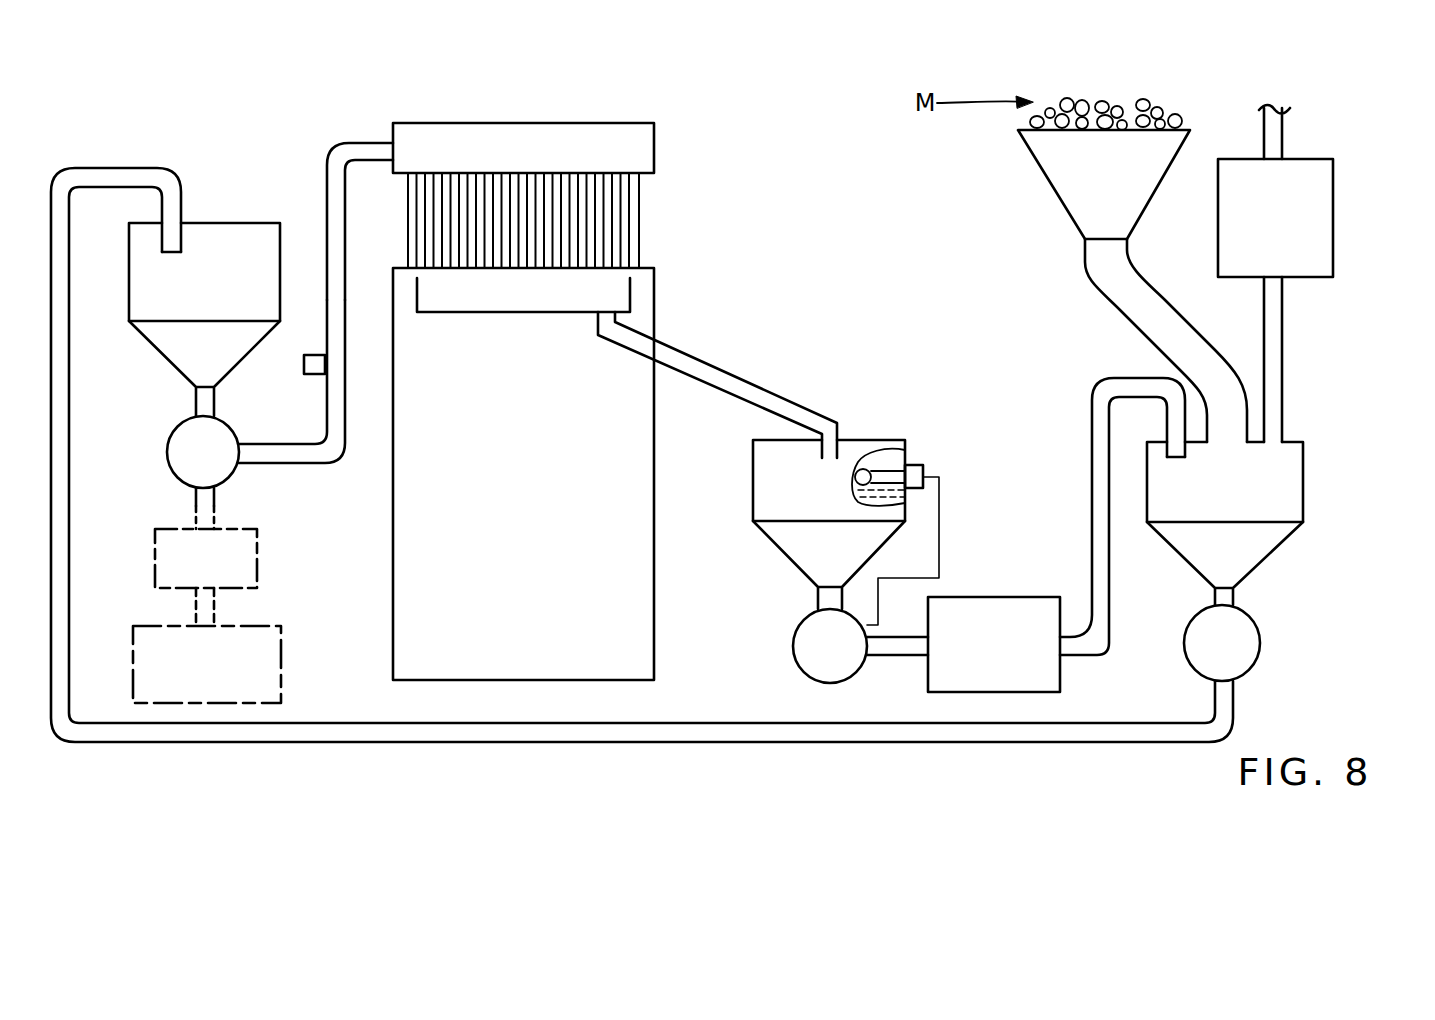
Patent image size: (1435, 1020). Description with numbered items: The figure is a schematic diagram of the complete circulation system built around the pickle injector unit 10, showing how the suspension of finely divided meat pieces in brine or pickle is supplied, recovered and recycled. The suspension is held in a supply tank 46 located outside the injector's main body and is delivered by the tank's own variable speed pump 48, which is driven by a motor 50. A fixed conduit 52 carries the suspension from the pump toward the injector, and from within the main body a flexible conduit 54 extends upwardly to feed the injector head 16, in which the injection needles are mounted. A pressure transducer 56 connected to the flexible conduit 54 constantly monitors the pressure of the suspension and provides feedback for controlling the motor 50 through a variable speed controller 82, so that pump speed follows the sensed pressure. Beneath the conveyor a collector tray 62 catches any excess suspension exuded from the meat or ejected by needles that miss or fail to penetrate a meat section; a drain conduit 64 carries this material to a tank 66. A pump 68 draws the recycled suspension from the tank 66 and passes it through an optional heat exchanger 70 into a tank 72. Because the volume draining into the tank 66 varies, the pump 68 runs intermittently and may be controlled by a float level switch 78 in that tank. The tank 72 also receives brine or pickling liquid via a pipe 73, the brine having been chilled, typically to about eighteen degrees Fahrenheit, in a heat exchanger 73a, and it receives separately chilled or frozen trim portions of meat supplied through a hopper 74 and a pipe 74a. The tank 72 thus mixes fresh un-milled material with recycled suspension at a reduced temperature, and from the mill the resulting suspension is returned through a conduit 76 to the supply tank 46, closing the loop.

The pickle injector unit 10 is at (669, 517).
The injector head 16 is at (655, 150).
The supply tank 46 is at (232, 223).
The variable speed pump 48 is at (167, 440).
The motor 50 is at (257, 540).
The fixed conduit 52 is at (336, 462).
The flexible conduit 54 is at (327, 222).
The pressure transducer 56 is at (312, 377).
The collector tray 62 is at (633, 291).
The drain conduit 64 is at (738, 372).
The tank 66 is at (880, 440).
The pump 68 is at (793, 636).
The heat exchanger 70 is at (990, 597).
The tank 72 is at (1275, 553).
The pipe 73 is at (1285, 307).
The heat exchanger 73a is at (1292, 222).
The hopper 74 is at (1262, 648).
The pipe 74a is at (1140, 318).
The conduit 76 is at (728, 723).
The float level switch 78 is at (925, 465).
The variable speed controller 82 is at (281, 626).